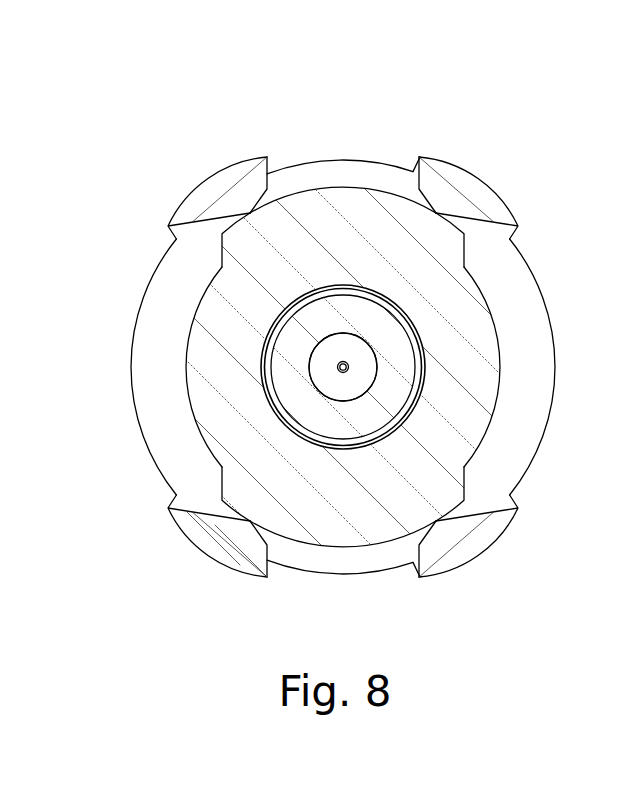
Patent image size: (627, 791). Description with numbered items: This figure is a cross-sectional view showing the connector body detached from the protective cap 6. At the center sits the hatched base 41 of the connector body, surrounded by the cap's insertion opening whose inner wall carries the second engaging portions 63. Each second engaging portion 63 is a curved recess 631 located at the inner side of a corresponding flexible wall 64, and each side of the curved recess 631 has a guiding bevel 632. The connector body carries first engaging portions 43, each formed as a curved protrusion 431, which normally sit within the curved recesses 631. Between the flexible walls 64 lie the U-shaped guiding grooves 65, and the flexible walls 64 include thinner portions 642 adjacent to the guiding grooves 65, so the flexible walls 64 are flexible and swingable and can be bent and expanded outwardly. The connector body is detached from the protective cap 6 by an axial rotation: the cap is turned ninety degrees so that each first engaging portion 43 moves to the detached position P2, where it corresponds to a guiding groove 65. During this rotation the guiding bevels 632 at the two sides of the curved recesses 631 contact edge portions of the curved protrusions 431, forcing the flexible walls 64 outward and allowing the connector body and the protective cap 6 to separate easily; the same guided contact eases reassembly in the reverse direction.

The protective cap 6 is at (556, 352).
The base 41 is at (215, 322).
The first engaging portion 43 is at (393, 195).
The curved protrusion 431 is at (300, 200).
The second engaging portion 63 is at (135, 404).
The curved recess 631 is at (178, 278).
The guiding bevel 632 is at (260, 196).
The flexible wall 64 is at (497, 199).
The thinner portion 642 is at (220, 192).
The guiding groove 65 is at (340, 558).
The detached position P2 is at (343, 207).